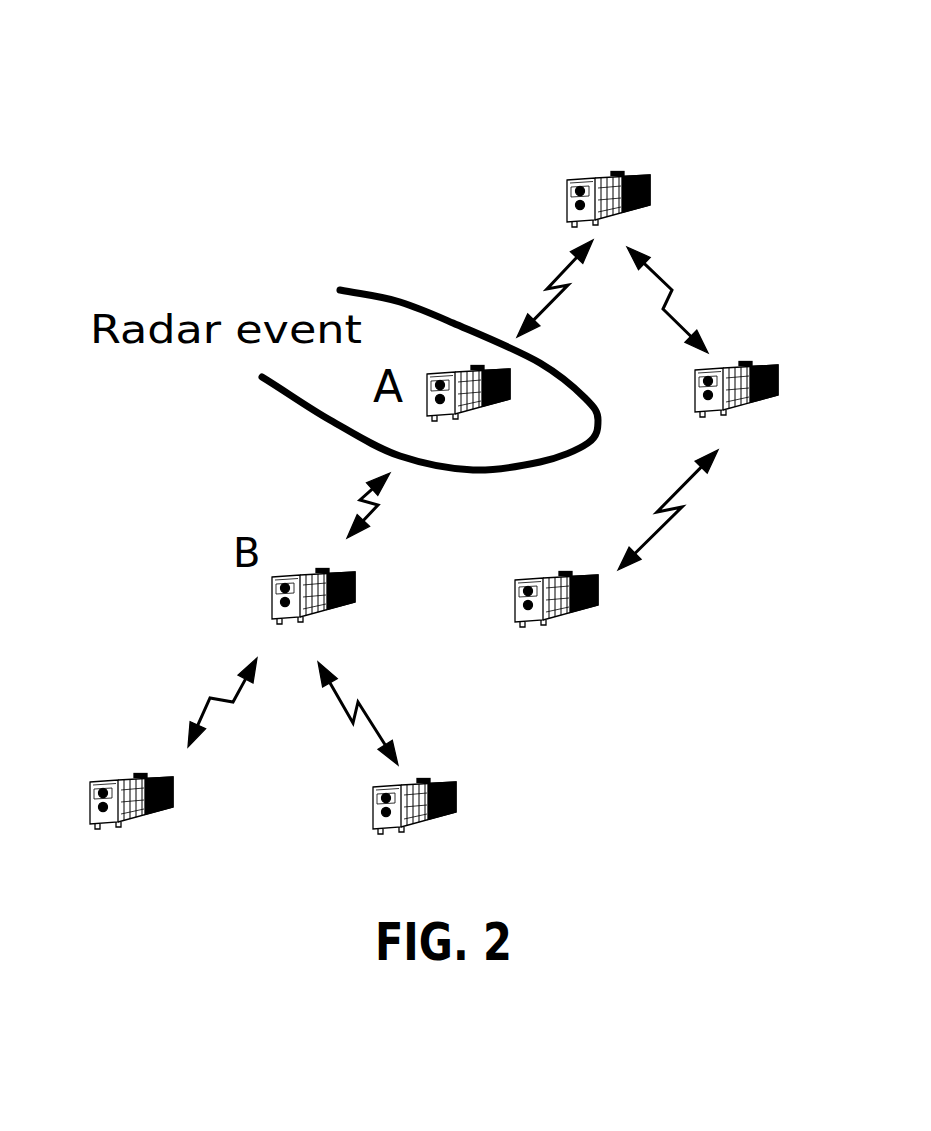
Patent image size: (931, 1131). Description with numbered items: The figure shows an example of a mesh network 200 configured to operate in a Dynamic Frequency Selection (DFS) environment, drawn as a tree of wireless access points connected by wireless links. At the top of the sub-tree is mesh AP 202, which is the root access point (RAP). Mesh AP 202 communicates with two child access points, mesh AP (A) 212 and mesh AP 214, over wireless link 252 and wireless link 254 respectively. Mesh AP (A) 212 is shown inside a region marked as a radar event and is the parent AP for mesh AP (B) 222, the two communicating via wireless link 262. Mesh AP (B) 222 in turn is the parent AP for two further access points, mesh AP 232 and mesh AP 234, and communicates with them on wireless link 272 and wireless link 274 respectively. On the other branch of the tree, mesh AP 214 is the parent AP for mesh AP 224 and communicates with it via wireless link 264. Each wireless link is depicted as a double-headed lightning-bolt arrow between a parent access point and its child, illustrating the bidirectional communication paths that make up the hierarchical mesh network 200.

The mesh network 200 is at (204, 105).
The mesh AP 202 is at (632, 213).
The mesh AP (A) 212 is at (492, 407).
The mesh AP 214 is at (768, 408).
The mesh AP (B) 222 is at (342, 610).
The mesh AP 224 is at (588, 600).
The mesh AP 232 is at (165, 813).
The mesh AP 234 is at (432, 820).
The wireless link 252 is at (548, 288).
The wireless link 254 is at (673, 292).
The wireless link 262 is at (363, 496).
The wireless link 264 is at (665, 528).
The wireless link 272 is at (223, 685).
The wireless link 274 is at (332, 688).